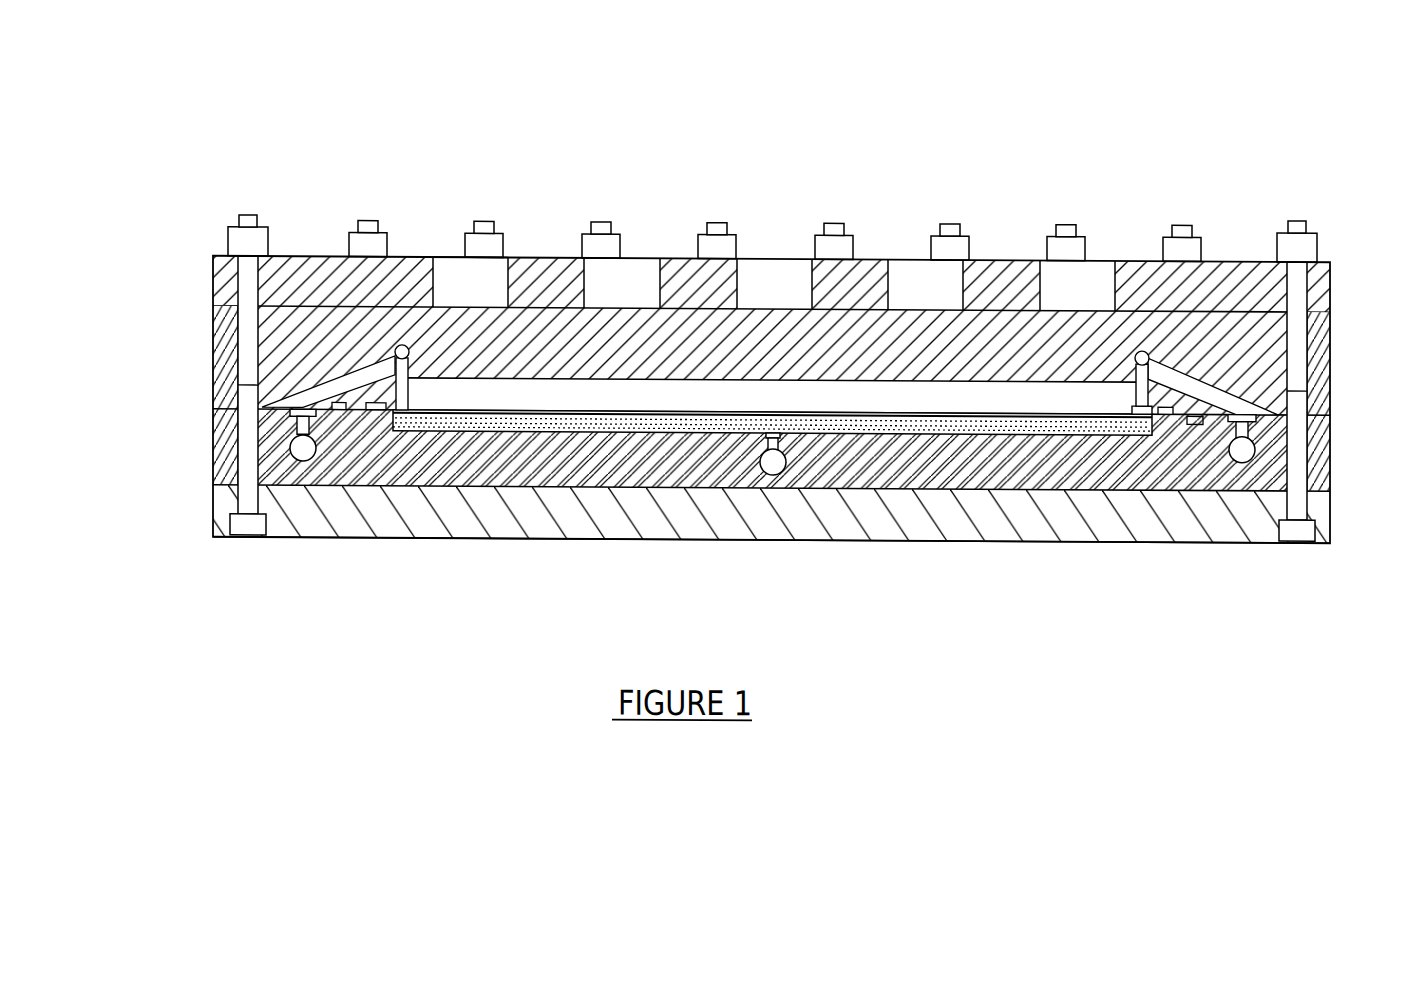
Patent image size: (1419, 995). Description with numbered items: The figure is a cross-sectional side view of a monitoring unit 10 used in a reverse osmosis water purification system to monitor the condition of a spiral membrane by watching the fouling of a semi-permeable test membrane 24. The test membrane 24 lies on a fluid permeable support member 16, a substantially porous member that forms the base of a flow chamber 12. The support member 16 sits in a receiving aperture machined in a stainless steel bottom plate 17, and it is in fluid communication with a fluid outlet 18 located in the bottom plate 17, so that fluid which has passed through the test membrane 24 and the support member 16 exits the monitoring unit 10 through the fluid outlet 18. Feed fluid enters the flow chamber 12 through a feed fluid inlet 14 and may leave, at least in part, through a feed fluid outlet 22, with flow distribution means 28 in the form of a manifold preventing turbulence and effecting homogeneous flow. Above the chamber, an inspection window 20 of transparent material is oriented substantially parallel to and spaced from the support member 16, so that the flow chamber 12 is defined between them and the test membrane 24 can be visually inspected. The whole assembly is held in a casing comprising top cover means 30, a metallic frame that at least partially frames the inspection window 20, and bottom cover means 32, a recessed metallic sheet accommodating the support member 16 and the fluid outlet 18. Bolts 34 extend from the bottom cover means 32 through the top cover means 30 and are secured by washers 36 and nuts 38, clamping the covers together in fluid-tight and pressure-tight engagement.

The monitoring unit 10 is at (1162, 113).
The flow chamber 12 is at (950, 401).
The feed fluid inlet 14 is at (300, 448).
The fluid permeable support member 16 is at (437, 425).
The bottom plate 17 is at (1037, 463).
The fluid outlet 18 is at (768, 467).
The inspection window 20 is at (282, 340).
The feed fluid outlet 22 is at (1240, 460).
The semi-permeable test membrane 24 is at (1100, 410).
The flow distribution means 28 is at (403, 347).
The top cover means 30 is at (1195, 270).
The bottom cover means 32 is at (468, 520).
The bolts 34 is at (250, 285).
The washers 36 is at (503, 258).
The nuts 38 is at (497, 257).